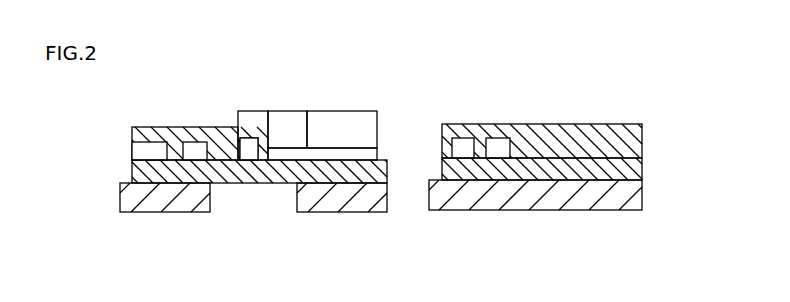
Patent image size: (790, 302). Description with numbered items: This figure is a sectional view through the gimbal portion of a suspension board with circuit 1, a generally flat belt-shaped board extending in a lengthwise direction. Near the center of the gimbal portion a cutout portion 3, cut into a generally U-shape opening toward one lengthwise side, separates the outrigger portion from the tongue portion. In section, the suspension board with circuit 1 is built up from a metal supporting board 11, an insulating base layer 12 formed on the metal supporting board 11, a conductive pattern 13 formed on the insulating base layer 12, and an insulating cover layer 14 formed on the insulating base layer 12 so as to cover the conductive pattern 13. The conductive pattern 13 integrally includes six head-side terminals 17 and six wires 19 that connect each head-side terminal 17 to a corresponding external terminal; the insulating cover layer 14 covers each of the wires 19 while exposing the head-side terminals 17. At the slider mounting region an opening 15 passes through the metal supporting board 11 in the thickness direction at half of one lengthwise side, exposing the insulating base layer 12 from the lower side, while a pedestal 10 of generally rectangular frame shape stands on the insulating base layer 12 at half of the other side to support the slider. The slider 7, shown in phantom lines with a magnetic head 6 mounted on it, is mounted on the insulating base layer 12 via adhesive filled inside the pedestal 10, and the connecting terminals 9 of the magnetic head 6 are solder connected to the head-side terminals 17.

The suspension board with circuit 1 is at (398, 284).
The cutout portion 3 is at (430, 200).
The magnetic head 6 is at (301, 111).
The slider 7 is at (338, 111).
The connecting terminals 9 is at (250, 111).
The pedestal 10 is at (378, 146).
The metal supporting board 11 is at (640, 195).
The insulating base layer 12 is at (133, 172).
The conductive pattern 13 is at (384, 88).
The insulating cover layer 14 is at (183, 127).
The opening 15 is at (298, 194).
The head-side terminals 17 is at (256, 140).
The wires 19 is at (135, 152).